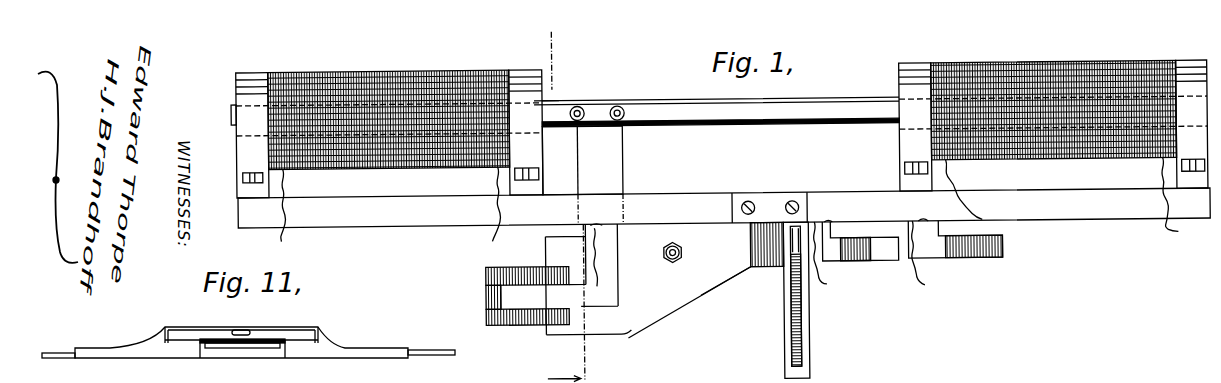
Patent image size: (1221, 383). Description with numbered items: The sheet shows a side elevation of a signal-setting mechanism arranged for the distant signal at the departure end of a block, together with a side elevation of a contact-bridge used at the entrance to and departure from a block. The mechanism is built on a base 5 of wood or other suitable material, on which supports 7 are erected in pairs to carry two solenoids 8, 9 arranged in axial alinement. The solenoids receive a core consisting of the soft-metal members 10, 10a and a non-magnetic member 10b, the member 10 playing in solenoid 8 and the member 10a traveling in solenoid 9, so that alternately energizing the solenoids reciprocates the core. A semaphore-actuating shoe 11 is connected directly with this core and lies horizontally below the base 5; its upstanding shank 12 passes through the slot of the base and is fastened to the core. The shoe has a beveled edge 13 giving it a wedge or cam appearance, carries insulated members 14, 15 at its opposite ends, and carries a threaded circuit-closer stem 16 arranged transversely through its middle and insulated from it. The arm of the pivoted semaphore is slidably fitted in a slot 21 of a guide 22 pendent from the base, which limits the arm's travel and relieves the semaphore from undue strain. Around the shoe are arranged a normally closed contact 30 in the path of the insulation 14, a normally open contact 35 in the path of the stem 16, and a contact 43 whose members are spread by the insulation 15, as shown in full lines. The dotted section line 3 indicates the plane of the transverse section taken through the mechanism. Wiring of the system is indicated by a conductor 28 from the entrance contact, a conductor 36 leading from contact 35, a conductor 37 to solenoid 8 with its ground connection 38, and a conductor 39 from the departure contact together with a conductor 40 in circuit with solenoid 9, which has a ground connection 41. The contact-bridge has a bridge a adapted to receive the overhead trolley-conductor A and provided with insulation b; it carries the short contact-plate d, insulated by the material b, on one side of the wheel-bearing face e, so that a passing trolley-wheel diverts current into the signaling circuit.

In FIG. 1, the section line 3 is at (544, 60).
In FIG. 1, the base 5 is at (1024, 204).
In FIG. 1, the supports 7 is at (247, 74).
In FIG. 1, the solenoid 8 is at (1046, 70).
In FIG. 1, the solenoid 9 is at (378, 73).
In FIG. 1, the soft-metal core member 10 is at (809, 131).
In FIG. 1, the soft-metal core member 10a is at (555, 140).
In FIG. 1, the non-magnetic core member 10b is at (600, 105).
In FIG. 1, the semaphore-actuating shoe 11 is at (656, 303).
In FIG. 1, the upstanding shank 12 is at (622, 167).
In FIG. 1, the beveled edge 13 is at (703, 299).
In FIG. 1, the insulated member 14 is at (777, 273).
In FIG. 1, the insulated member 15 is at (496, 330).
In FIG. 1, the threaded stem 16 is at (670, 264).
In FIG. 1, the slot 21 is at (802, 358).
In FIG. 1, the guide 22 is at (782, 350).
In FIG. 1, the conductor 28 is at (603, 280).
In FIG. 1, the normally closed contact 30 is at (1003, 256).
In FIG. 1, the normally open contact 35 is at (878, 257).
In FIG. 1, the conductor 36 is at (932, 265).
In FIG. 1, the conductor 37 is at (977, 189).
In FIG. 1, the ground connection 38 is at (1183, 203).
In FIG. 1, the conductor 39 is at (838, 266).
In FIG. 1, the conductor 40 is at (292, 213).
In FIG. 1, the ground connection 41 is at (492, 245).
In FIG. 1, the normally open contact 43 is at (580, 300).
In FIG. 11, the bridge a is at (342, 346).
In FIG. 11, the insulation b is at (212, 338).
In FIG. 11, the short contact-plate d is at (245, 345).
In FIG. 11, the wheel-bearing face e is at (341, 352).
In FIG. 11, the overhead trolley-conductor A is at (426, 351).